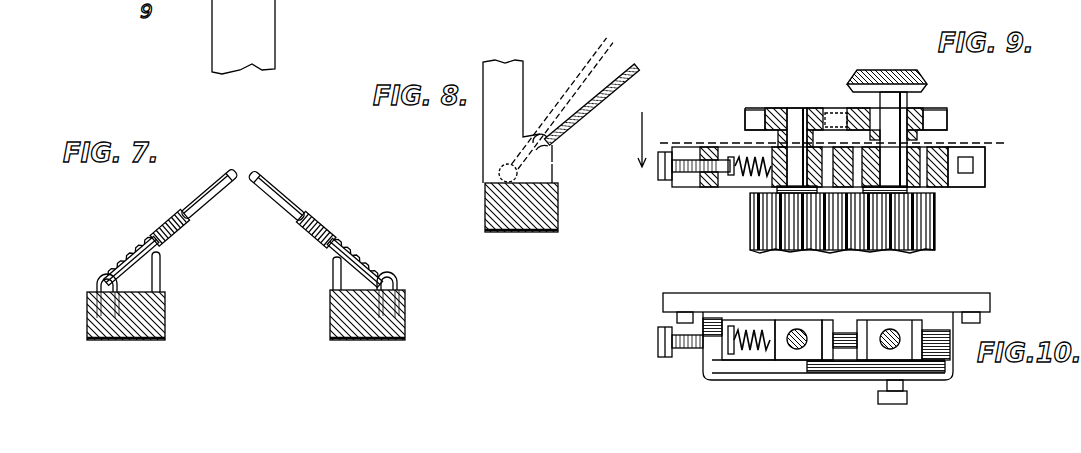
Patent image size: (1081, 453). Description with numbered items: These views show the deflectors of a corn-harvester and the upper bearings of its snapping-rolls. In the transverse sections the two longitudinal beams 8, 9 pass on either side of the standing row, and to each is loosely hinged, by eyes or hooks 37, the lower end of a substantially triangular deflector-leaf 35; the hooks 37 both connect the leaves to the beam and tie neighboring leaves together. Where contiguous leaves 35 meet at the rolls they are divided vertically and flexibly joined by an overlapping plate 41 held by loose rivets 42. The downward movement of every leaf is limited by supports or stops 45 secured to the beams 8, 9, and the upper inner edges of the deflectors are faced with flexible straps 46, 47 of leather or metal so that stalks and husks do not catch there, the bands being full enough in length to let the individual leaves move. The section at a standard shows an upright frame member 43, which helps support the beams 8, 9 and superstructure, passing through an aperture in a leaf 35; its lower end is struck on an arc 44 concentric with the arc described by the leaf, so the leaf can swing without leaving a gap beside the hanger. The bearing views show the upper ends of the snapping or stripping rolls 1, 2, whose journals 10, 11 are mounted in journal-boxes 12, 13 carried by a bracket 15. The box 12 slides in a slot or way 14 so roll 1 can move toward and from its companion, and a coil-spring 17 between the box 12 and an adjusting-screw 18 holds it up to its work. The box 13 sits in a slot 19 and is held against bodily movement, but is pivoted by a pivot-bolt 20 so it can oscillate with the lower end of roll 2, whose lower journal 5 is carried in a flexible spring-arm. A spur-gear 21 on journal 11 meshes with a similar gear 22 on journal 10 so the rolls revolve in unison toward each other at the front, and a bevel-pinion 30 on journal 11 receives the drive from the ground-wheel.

In FIG. 9, the snapping or stripping roll 1 is at (753, 228).
In FIG. 9, the snapping or stripping roll 2 is at (927, 224).
In FIG. 9, the journal 5 is at (890, 248).
In FIG. 7, the longitudinal beam 8 is at (163, 315).
In FIG. 8, the longitudinal beam 8 is at (486, 215).
In FIG. 7, the longitudinal beam 9 is at (337, 314).
In FIG. 9, the journal 10 is at (1008, 143).
In FIG. 10, the journal 10 is at (801, 332).
In FIG. 9, the journal 11 is at (900, 103).
In FIG. 10, the journal 11 is at (890, 330).
In FIG. 9, the journal-box 12 is at (770, 150).
In FIG. 10, the journal-box 12 is at (790, 327).
In FIG. 9, the journal-box 13 is at (933, 148).
In FIG. 10, the journal-box 13 is at (906, 325).
In FIG. 9, the slot or way 14 is at (761, 181).
In FIG. 10, the slot or way 14 is at (748, 322).
In FIG. 9, the bracket 15 is at (687, 182).
In FIG. 10, the bracket 15 is at (843, 298).
In FIG. 9, the coil-spring 17 is at (733, 183).
In FIG. 10, the coil-spring 17 is at (753, 353).
In FIG. 9, the adjusting-screw 18 is at (667, 181).
In FIG. 10, the adjusting-screw 18 is at (658, 344).
In FIG. 9, the slot 19 is at (920, 178).
In FIG. 10, the slot 19 is at (927, 323).
In FIG. 10, the pivot-bolt 20 is at (908, 398).
In FIG. 9, the spur-gear 21 is at (837, 109).
In FIG. 9, the spur-gear 22 is at (755, 111).
In FIG. 9, the bevel-pinion 30 is at (882, 70).
In FIG. 8, the deflector-leaf 35 is at (590, 100).
In FIG. 7, the eyes or hooks 37 is at (104, 280).
In FIG. 7, the overlapping plate 41 is at (143, 251).
In FIG. 7, the loose rivets 42 is at (360, 254).
In FIG. 8, the upright frame member or standard 43 is at (493, 137).
In FIG. 8, the arc 44 is at (553, 171).
In FIG. 7, the supports or stops 45 is at (161, 268).
In FIG. 7, the strap or band 46 is at (236, 184).
In FIG. 8, the strap or band 46 is at (634, 77).
In FIG. 7, the strap or band 47 is at (254, 188).